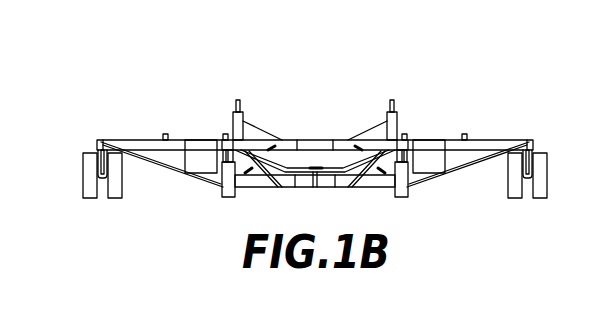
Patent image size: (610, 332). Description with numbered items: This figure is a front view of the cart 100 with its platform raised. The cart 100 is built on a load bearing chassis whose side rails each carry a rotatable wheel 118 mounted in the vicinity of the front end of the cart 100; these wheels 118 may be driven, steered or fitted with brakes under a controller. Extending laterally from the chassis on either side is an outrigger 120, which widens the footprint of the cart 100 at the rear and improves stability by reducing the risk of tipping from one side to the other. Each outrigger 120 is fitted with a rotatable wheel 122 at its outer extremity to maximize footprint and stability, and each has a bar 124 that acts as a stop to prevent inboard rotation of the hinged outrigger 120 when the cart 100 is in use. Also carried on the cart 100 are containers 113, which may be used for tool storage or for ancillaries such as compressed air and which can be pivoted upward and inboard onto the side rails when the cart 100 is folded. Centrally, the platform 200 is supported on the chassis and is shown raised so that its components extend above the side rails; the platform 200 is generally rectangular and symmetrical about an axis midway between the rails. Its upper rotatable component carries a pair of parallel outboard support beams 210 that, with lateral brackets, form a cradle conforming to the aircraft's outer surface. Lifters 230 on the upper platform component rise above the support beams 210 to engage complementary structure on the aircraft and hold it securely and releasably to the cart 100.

The cart 100 is at (126, 86).
The platform 200 is at (318, 130).
The lifter 230 is at (235, 103).
The outboard support beam 210 is at (229, 124).
The container 113 is at (200, 150).
The outrigger 120 is at (135, 140).
The rotatable wheel 122 is at (109, 199).
The bar 124 is at (171, 168).
The rotatable wheel 118 is at (223, 198).